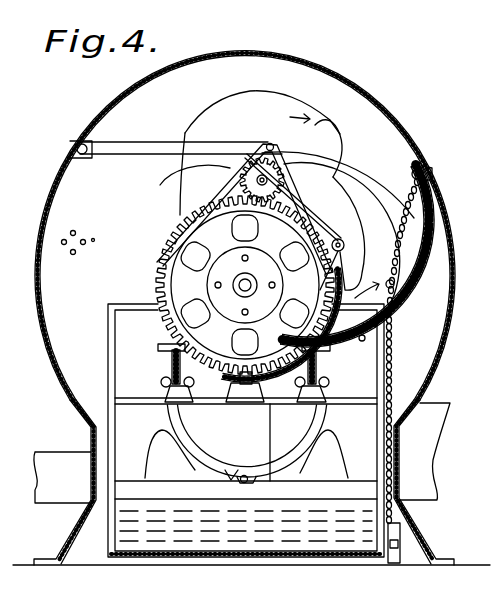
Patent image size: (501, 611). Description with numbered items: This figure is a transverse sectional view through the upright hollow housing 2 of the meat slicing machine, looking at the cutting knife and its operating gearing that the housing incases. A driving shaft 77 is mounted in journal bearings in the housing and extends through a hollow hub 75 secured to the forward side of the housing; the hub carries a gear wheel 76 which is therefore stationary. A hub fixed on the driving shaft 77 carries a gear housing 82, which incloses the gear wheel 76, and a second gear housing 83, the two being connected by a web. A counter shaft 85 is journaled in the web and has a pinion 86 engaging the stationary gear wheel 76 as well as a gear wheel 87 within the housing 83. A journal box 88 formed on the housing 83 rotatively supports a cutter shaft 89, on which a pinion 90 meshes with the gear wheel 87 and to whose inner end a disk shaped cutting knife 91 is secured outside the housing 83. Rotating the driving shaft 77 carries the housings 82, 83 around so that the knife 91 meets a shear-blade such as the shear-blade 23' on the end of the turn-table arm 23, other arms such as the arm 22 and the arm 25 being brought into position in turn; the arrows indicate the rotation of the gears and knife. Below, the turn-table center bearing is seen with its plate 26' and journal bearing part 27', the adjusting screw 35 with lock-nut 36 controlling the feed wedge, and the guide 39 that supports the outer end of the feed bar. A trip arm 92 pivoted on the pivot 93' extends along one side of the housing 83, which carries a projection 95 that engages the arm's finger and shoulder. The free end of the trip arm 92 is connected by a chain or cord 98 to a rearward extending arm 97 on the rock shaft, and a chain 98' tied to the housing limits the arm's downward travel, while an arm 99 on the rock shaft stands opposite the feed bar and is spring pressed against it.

The upright hollow housing 2 is at (97, 111).
The turn-table arm 22 is at (45, 452).
The turn-table arm 23 is at (225, 388).
The stationary shear-blade 23' is at (246, 444).
The turn-table arm 25 is at (431, 447).
The center bearing plate 26' is at (286, 488).
The journal bearing part 27' is at (246, 451).
The adjusting screw 35 is at (170, 361).
The lock-nut 36 is at (117, 369).
The guide 39 is at (228, 472).
The hollow hub 75 is at (240, 280).
The gear wheel 76 is at (155, 266).
The driving shaft 77 is at (156, 289).
The gear housing 82 is at (179, 226).
The gear housing 83 is at (215, 112).
The counter shaft 85 is at (225, 172).
The pinion 86 is at (200, 191).
The gear wheel 87 is at (300, 118).
The journal box 88 is at (357, 147).
The cutter shaft 89 is at (360, 342).
The pinion 90 is at (372, 168).
The disk shaped cutting knife 91 is at (434, 254).
The trip arm 92 is at (145, 148).
The pivot 93' is at (78, 166).
The projection 95 is at (327, 124).
The rearward extending arm 97 is at (401, 552).
The chain or cord 98 is at (432, 351).
The chain 98' is at (460, 211).
The arm 99 is at (243, 484).